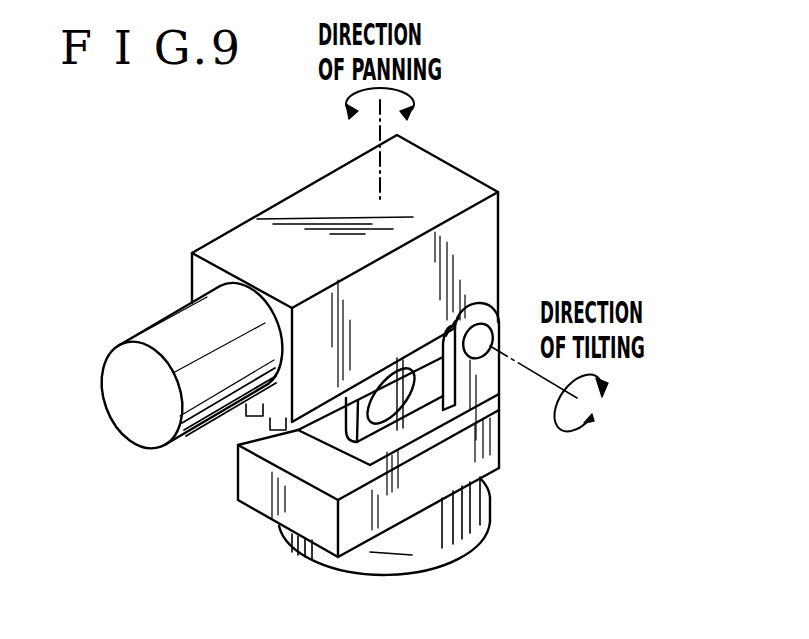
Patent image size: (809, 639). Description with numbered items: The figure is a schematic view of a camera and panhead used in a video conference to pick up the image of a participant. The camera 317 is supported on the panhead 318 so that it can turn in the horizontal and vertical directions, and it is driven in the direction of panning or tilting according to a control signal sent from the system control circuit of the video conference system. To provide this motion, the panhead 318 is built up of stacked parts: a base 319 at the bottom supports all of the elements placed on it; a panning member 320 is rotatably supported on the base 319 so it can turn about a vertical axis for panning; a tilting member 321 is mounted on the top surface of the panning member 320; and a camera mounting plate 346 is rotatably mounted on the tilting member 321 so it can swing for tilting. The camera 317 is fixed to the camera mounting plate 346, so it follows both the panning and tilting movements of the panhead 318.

The camera 317 is at (255, 200).
The panhead 318 is at (330, 575).
The base 319 is at (442, 550).
The panning member 320 is at (488, 515).
The tilting member 321 is at (497, 383).
The camera mounting plate 346 is at (427, 383).